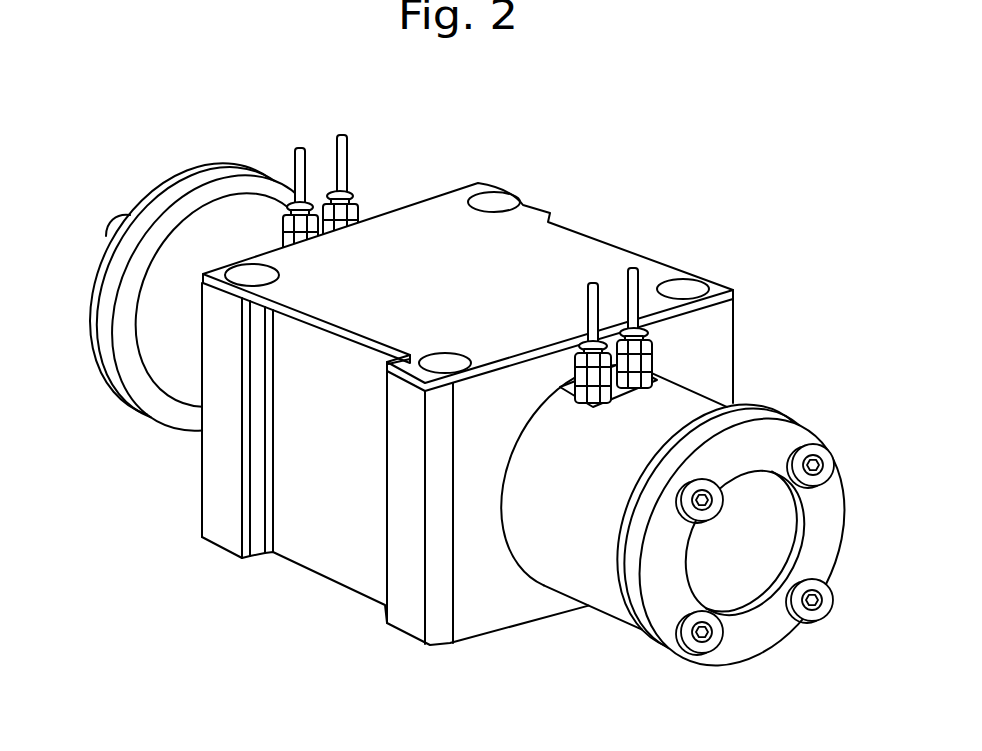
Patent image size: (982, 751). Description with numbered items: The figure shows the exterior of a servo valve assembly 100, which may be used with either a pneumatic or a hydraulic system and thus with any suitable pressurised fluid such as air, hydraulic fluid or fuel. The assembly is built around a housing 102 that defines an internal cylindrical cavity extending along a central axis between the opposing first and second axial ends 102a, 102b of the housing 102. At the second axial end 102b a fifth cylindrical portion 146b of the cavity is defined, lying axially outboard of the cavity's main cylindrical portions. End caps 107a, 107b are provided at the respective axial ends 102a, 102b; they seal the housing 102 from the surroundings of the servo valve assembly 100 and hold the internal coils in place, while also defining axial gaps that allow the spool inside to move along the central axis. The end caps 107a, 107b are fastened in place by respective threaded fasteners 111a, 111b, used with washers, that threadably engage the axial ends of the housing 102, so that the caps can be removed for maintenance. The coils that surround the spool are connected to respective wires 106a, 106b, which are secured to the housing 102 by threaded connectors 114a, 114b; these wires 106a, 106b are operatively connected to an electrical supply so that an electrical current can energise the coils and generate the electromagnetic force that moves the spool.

The servo valve assembly 100 is at (790, 192).
The housing 102 is at (551, 258).
The first axial end 102a is at (193, 165).
The second axial end 102b is at (620, 556).
The wire 106a is at (337, 157).
The wire 106b is at (636, 325).
The end cap 107a is at (150, 194).
The end cap 107b is at (745, 408).
The threaded fastener 111a is at (108, 222).
The threaded fastener 111b is at (824, 456).
The threaded connector 114a is at (322, 212).
The threaded connector 114b is at (642, 360).
The fifth cylindrical portion 146b is at (751, 573).